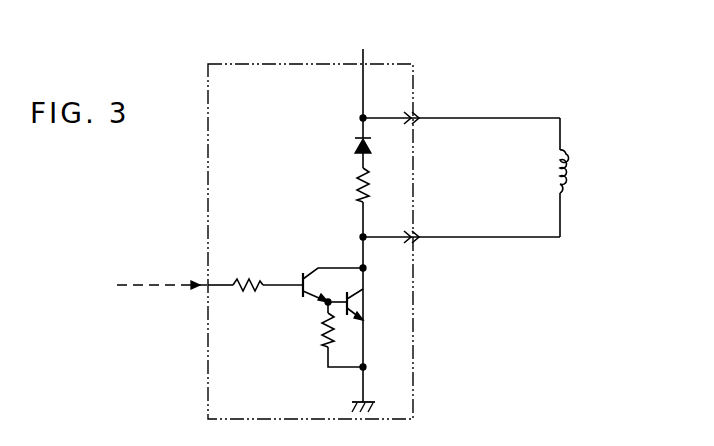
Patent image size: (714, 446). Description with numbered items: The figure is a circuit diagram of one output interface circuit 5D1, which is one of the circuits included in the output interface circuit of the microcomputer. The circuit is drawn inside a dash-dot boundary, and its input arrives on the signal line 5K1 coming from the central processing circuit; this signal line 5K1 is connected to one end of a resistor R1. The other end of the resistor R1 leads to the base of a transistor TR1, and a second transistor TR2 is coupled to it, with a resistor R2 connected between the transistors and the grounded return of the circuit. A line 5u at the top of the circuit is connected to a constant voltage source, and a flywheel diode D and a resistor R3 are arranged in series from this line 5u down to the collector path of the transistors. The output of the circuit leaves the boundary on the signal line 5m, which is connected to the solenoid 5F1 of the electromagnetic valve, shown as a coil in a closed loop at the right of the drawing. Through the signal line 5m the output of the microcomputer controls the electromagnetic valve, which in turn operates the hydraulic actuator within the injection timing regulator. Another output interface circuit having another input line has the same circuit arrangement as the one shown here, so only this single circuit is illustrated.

The output interface circuit 5D1 is at (413, 338).
The line 5u is at (362, 100).
The flywheel diode D is at (356, 148).
The resistor R3 is at (356, 190).
The signal line 5m is at (472, 118).
The solenoid 5F1 is at (550, 178).
The signal line 5K1 is at (153, 270).
The resistor R1 is at (262, 273).
The transistor TR1 is at (313, 269).
The transistor TR2 is at (383, 305).
The resistor R2 is at (325, 331).